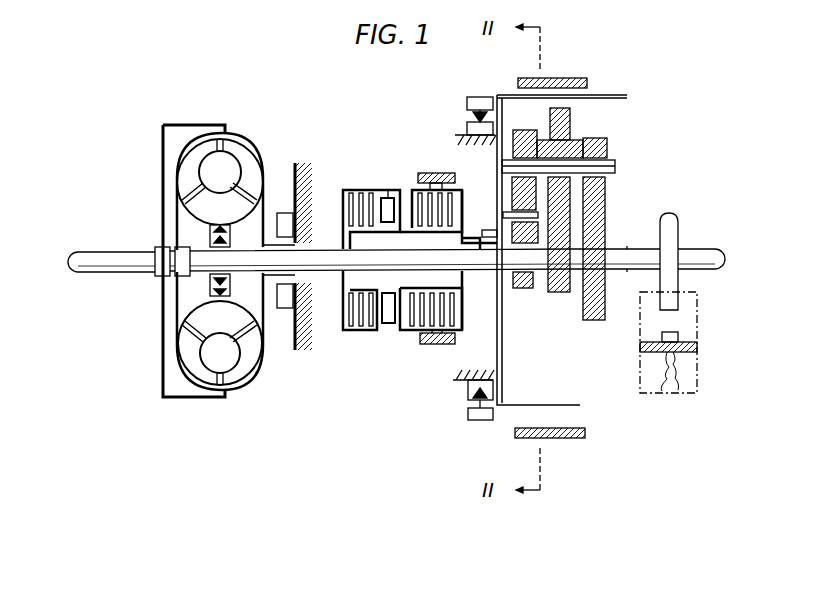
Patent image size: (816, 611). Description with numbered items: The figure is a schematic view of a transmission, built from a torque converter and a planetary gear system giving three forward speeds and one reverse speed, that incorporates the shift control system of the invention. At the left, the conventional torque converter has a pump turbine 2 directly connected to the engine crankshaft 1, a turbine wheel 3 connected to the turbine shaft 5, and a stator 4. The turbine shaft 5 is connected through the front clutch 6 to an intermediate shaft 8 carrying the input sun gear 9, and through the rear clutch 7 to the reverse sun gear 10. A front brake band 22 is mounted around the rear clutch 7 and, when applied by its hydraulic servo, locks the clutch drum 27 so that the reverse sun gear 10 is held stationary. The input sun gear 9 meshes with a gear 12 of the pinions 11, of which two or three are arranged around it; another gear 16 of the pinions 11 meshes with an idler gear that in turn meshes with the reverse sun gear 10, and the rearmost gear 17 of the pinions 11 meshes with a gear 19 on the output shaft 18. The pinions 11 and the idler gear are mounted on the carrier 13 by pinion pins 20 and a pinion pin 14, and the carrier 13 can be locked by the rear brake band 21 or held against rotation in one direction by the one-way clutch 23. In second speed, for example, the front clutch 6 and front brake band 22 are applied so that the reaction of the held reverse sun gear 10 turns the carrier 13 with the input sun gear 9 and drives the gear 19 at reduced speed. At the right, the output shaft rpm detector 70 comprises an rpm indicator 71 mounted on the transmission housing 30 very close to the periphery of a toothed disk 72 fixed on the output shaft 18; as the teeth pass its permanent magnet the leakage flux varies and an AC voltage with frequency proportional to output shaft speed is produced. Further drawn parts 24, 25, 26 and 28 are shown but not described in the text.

The engine crankshaft 1 is at (112, 275).
The pump turbine 2 is at (245, 152).
The turbine wheel 3 is at (190, 160).
The stator 4 is at (200, 215).
The turbine shaft 5 is at (320, 275).
The front clutch 6 is at (352, 305).
The rear clutch 7 is at (418, 320).
The intermediate shaft 8 is at (488, 280).
The input sun gear 9 is at (558, 292).
The reverse sun gear 10 is at (525, 288).
The pinions 11 is at (575, 139).
The gear of pinions 12 is at (573, 111).
The carrier 13 is at (497, 163).
The pinion pin 14 is at (508, 215).
The gear of pinions 16 is at (522, 130).
The rearmost gear of pinions 17 is at (607, 148).
The output shaft 18 is at (630, 269).
The gear of output shaft 19 is at (605, 226).
The pinion pins 20 is at (615, 167).
The rear brake band 21 is at (576, 78).
The front brake band 22 is at (436, 173).
The one-way clutch 23 is at (467, 128).
The first clutch 24 is at (350, 189).
The clutch plate 25 is at (388, 198).
The clutch plate 26 is at (345, 302).
The clutch drum 27 is at (432, 344).
The brake 28 is at (448, 346).
The housing 30 is at (690, 343).
The output shaft rpm detector 70 is at (652, 393).
The rpm indicator 71 is at (662, 337).
The toothed disk 72 is at (672, 233).